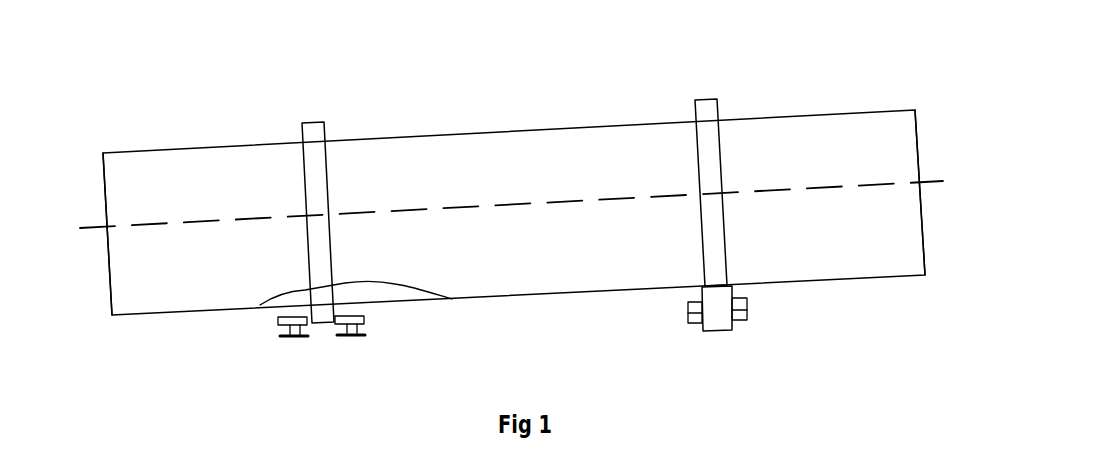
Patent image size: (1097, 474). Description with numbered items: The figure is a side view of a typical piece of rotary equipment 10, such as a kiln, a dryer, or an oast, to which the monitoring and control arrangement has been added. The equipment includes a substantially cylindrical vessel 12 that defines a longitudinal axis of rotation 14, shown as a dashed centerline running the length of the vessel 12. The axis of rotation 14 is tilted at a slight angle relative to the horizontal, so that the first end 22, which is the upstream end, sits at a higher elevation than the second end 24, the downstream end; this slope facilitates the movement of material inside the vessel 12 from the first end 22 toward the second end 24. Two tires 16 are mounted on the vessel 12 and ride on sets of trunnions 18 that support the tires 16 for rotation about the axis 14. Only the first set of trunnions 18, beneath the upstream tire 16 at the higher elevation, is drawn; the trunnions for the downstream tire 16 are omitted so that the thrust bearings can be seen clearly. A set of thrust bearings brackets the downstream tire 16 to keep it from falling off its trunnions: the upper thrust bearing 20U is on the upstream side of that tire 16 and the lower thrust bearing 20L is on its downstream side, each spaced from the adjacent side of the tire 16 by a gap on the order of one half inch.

The rotary equipment 10 is at (406, 103).
The vessel 12 is at (608, 123).
The longitudinal axis of rotation 14 is at (510, 203).
The tire 16 is at (307, 125).
The trunnions 18 is at (720, 330).
The lower thrust bearing 20L is at (278, 320).
The upper thrust bearing 20U is at (365, 313).
The first end 22 is at (917, 133).
The second end 24 is at (103, 207).